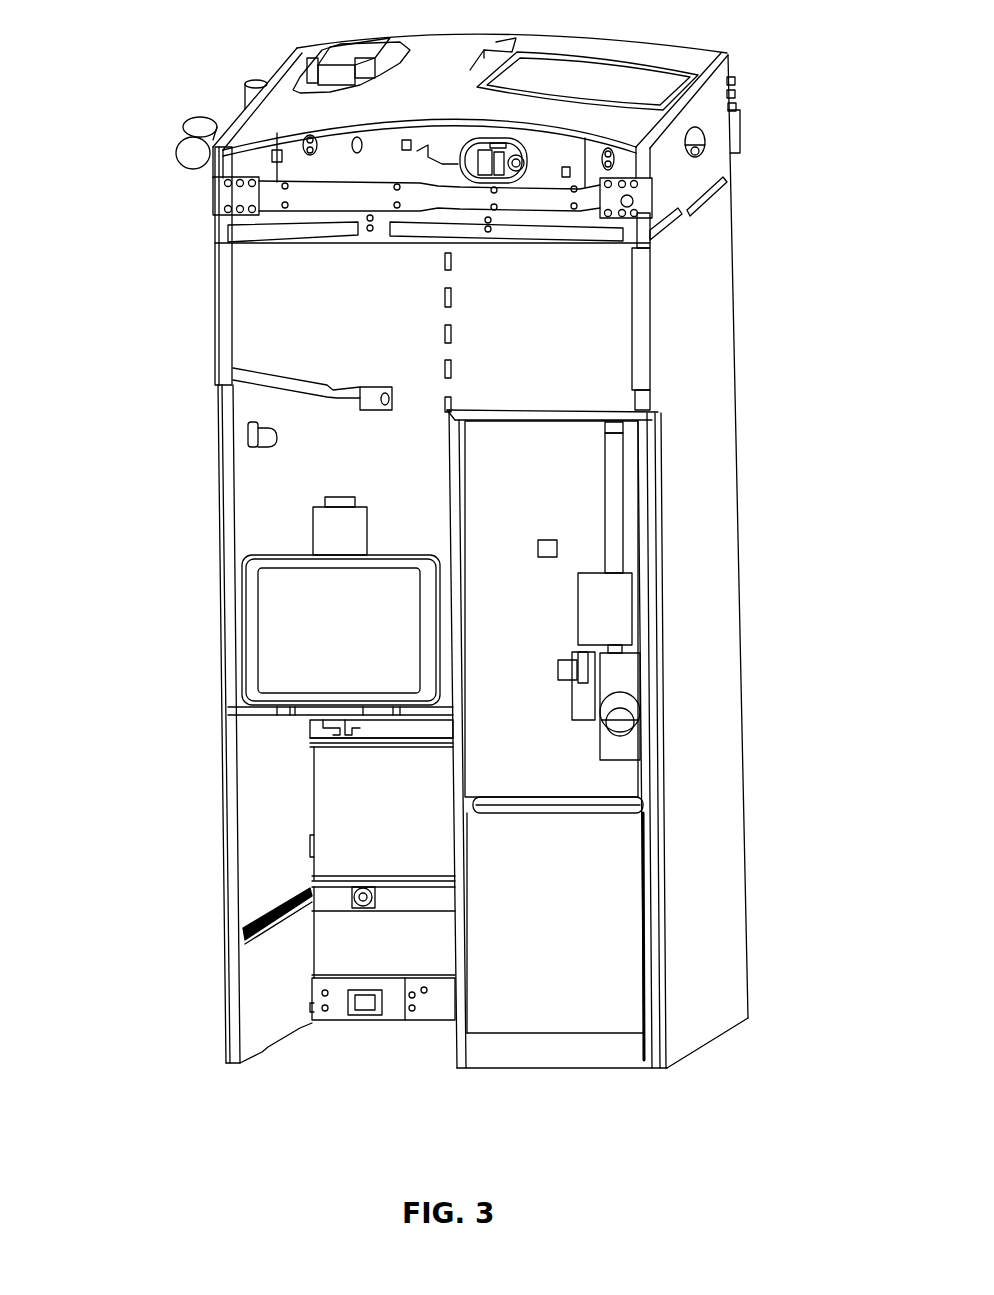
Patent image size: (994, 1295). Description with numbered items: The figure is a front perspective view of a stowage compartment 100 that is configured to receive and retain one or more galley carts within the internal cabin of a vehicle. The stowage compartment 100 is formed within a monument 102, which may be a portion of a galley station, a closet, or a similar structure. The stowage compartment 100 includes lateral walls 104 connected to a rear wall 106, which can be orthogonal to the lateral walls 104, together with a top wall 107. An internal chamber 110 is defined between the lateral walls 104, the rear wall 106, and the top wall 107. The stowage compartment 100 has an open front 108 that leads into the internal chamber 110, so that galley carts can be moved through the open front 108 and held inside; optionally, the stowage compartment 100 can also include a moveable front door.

The stowage compartment 100 is at (247, 897).
The monument 102 is at (750, 507).
The lateral walls 104 is at (247, 800).
The rear wall 106 is at (333, 793).
The top wall 107 is at (333, 722).
The open front 108 is at (336, 1069).
The internal chamber 110 is at (398, 942).